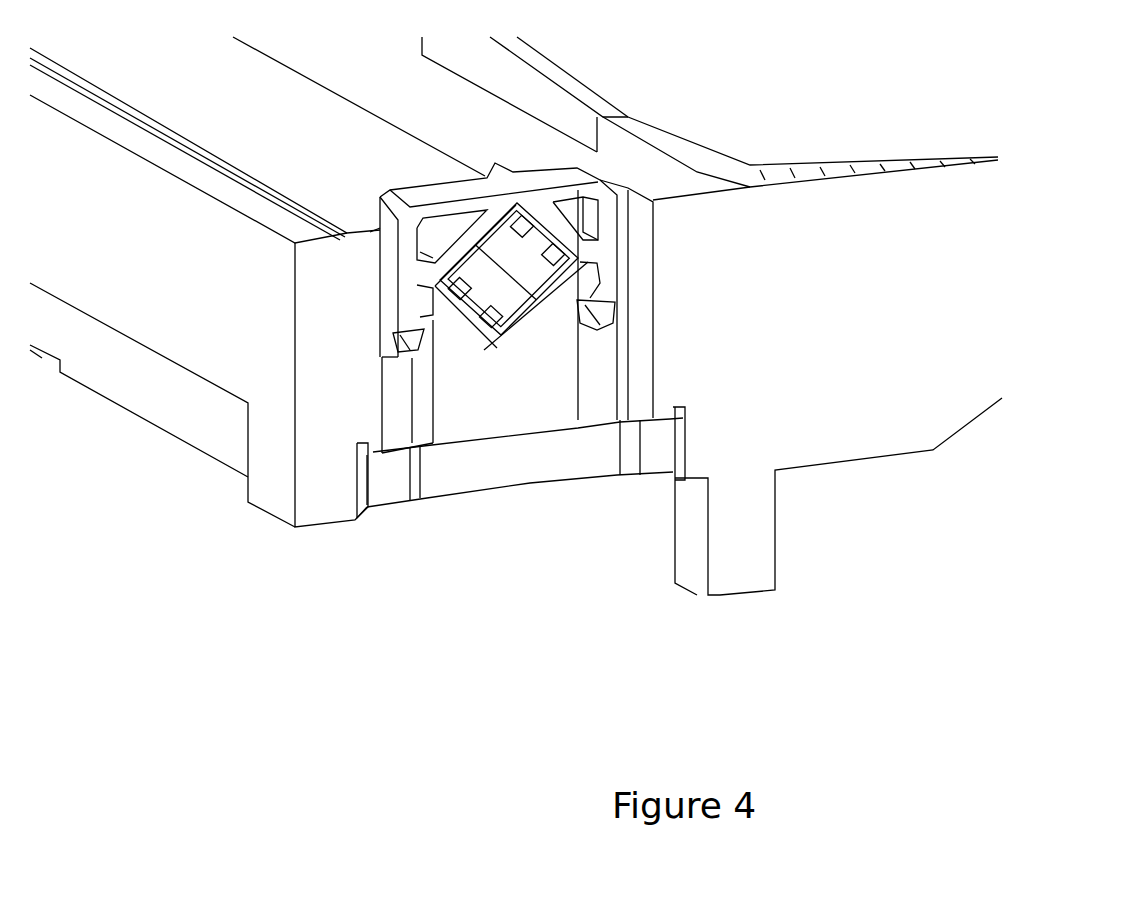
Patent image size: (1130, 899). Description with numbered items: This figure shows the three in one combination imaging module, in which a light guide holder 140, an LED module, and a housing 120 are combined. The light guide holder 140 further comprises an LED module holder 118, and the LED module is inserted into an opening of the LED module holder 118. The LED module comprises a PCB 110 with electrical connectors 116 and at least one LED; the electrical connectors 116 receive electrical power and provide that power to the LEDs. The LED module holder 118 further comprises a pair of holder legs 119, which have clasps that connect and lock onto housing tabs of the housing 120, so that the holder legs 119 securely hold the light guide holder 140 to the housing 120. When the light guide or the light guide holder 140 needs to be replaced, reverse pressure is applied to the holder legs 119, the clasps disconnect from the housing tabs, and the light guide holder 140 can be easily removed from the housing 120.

The PCB 110 is at (590, 300).
The electrical connectors 116 is at (637, 333).
The LED module holder 118 is at (605, 308).
The holder legs 119 is at (611, 414).
The housing 120 is at (516, 321).
The light guide holder 140 is at (474, 103).